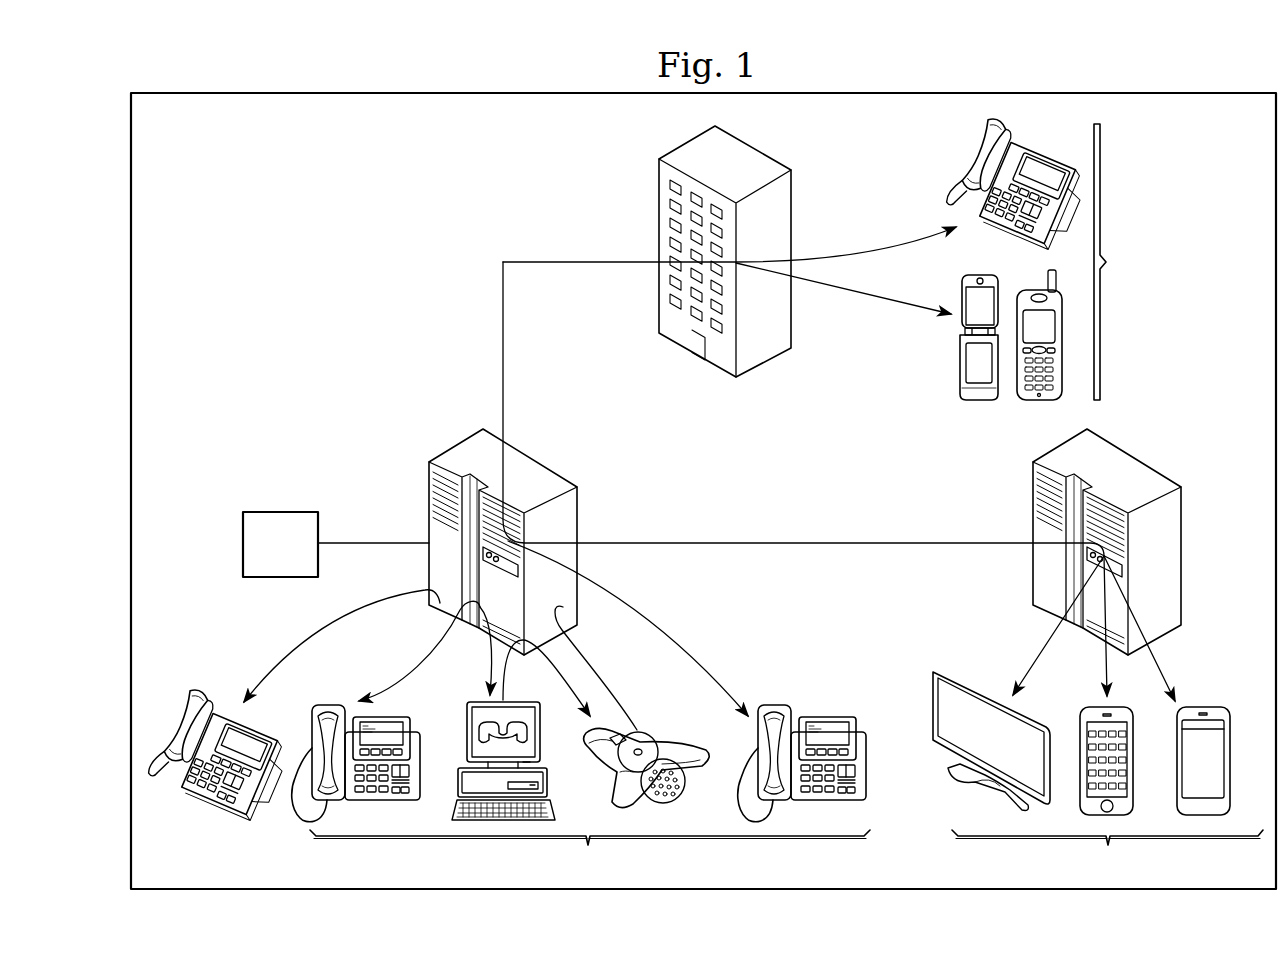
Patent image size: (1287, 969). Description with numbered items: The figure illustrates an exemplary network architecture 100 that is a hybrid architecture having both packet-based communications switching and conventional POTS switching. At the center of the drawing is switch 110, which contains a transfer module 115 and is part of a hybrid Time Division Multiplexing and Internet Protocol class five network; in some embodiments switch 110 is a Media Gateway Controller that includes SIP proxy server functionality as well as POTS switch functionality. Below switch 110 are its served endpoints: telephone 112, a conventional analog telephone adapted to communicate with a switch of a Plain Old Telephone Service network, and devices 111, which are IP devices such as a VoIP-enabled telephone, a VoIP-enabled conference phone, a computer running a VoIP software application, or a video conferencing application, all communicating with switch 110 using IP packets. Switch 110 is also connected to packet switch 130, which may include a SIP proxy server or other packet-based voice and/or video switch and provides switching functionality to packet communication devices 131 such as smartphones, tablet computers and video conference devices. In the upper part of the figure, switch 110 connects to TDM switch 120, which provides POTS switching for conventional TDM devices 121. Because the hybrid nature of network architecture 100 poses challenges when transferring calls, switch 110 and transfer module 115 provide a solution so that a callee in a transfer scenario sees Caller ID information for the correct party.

The network architecture 100 is at (387, 75).
The switch 110 is at (428, 504).
The devices 111 is at (581, 789).
The telephone 112 is at (214, 796).
The transfer module 115 is at (300, 558).
The TDM switch 120 is at (658, 210).
The TDM devices 121 is at (1048, 257).
The packet switch 130 is at (1183, 556).
The packet communication devices 131 is at (1098, 775).